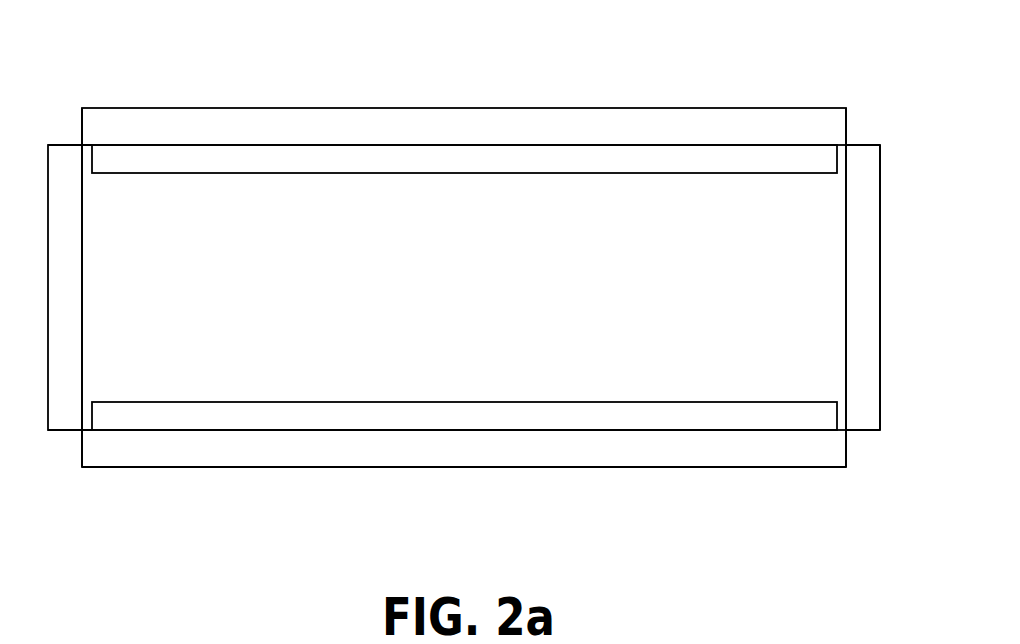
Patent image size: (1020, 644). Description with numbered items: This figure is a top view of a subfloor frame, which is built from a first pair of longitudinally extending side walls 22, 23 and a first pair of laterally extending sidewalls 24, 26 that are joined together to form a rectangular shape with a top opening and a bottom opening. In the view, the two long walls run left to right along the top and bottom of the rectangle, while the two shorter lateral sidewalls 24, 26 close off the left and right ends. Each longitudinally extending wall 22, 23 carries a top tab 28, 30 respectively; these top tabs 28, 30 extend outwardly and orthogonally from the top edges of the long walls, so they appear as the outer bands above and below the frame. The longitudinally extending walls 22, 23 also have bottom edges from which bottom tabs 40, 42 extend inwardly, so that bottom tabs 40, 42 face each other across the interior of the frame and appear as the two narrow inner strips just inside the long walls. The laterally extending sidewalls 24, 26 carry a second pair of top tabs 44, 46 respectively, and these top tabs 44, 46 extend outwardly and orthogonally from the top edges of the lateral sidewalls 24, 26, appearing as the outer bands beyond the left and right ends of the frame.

The longitudinally extending side wall 22 is at (90, 430).
The longitudinally extending side wall 23 is at (85, 143).
The laterally extending sidewall 24 is at (83, 227).
The laterally extending sidewall 26 is at (845, 223).
The top tab 28 is at (513, 127).
The top tab 30 is at (332, 450).
The bottom tab 40 is at (374, 160).
The bottom tab 42 is at (607, 415).
The top tab 44 is at (70, 280).
The top tab 46 is at (858, 280).